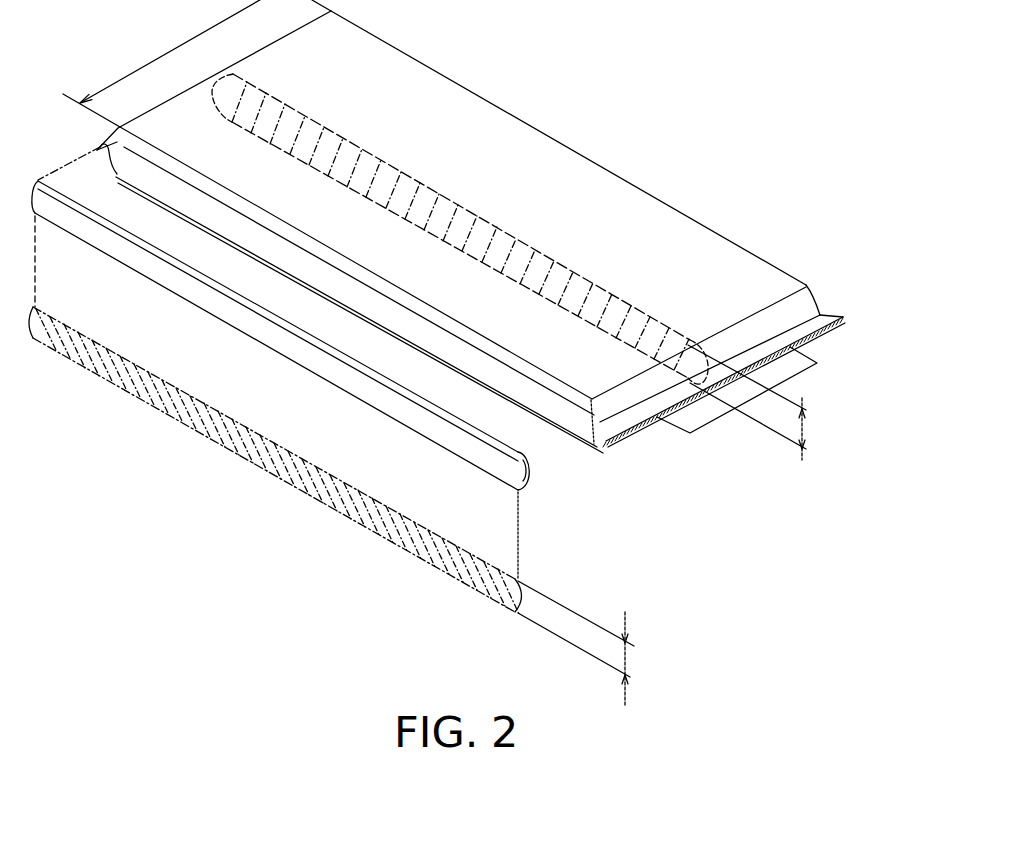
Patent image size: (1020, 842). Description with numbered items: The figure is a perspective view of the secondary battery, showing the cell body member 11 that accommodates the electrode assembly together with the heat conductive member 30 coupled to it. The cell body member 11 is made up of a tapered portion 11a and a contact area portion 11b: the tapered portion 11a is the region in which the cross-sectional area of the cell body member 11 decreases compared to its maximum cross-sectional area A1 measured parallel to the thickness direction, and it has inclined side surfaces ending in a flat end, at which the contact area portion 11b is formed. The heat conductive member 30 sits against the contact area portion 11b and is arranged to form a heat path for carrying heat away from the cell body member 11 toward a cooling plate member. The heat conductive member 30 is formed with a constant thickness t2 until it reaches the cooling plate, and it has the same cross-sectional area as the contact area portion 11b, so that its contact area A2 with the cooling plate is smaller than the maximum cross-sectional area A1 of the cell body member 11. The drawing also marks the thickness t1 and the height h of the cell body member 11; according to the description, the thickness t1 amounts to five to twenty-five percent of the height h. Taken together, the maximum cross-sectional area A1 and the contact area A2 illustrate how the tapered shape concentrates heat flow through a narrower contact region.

The height h is at (197, 63).
The maximum cross-sectional area A1 is at (442, 207).
The contact area A2 is at (218, 440).
The cell body member 11 is at (471, 273).
The tapered portion 11a is at (567, 397).
The contact area portion 11b is at (542, 408).
The heat conductive member 30 is at (497, 467).
The thickness t1 is at (761, 402).
The thickness t2 is at (587, 644).